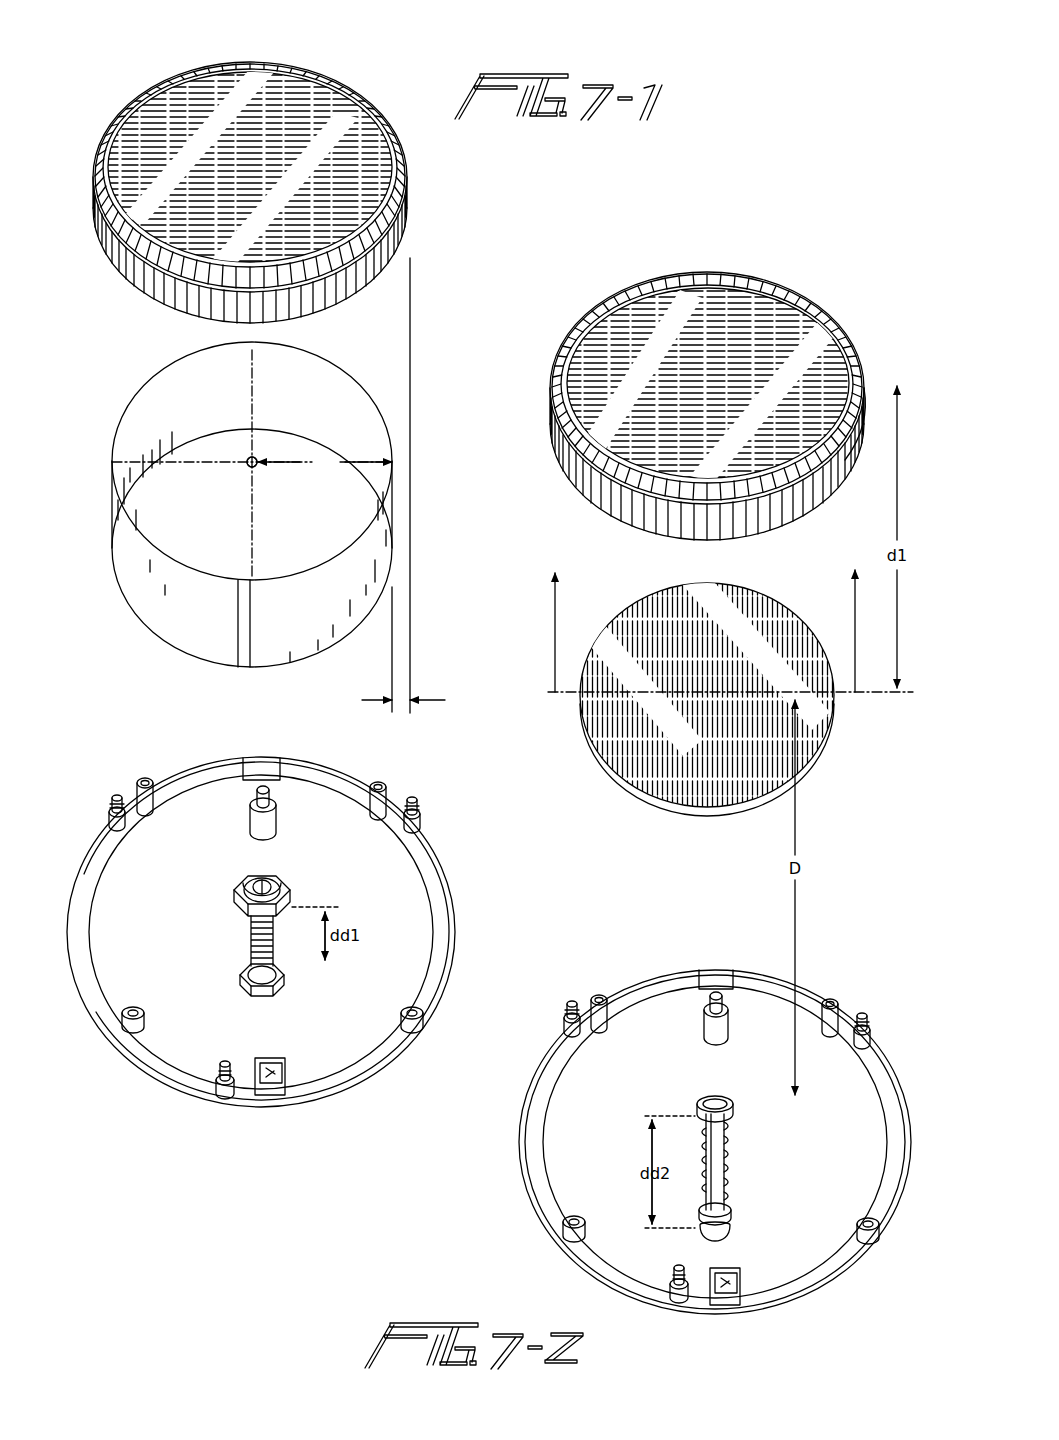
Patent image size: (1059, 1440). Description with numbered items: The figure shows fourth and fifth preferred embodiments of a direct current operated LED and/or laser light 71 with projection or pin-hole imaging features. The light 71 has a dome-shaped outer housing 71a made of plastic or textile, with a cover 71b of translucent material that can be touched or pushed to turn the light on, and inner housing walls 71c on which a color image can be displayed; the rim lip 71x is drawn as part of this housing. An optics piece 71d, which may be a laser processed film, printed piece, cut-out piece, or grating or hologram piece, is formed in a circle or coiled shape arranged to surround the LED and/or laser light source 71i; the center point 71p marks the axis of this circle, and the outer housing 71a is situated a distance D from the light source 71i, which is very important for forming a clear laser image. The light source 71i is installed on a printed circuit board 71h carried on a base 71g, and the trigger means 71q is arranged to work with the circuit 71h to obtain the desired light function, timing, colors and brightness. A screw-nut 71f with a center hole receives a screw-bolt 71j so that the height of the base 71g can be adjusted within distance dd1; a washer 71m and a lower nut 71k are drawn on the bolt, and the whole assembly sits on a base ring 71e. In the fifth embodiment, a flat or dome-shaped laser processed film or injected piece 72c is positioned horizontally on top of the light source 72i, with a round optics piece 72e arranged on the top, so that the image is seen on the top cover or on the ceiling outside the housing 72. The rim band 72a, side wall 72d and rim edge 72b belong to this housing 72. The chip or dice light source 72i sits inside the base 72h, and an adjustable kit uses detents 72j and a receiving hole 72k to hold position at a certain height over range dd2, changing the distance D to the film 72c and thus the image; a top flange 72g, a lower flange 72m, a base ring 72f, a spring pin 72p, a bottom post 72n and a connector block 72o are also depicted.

In FIG. 7-1, the direct current operated LED and/or laser light 71 is at (185, 112).
In FIG. 7-1, the outer housing 71a is at (122, 110).
In FIG. 7-1, the cover 71b is at (305, 110).
In FIG. 7-1, the inner housing walls 71c is at (410, 212).
In FIG. 7-1, the rim lip 71x is at (125, 248).
In FIG. 7-1, the optics piece 71d is at (343, 372).
In FIG. 7-1, the center point 71p is at (247, 462).
In FIG. 7-1, the base ring 71e is at (122, 1030).
In FIG. 7-1, the printed circuit board 71h is at (265, 882).
In FIG. 7-1, the screw-nut 71f is at (243, 876).
In FIG. 7-1, the LED and/or laser light source 71i is at (270, 886).
In FIG. 7-1, the base 71g is at (288, 894).
In FIG. 7-1, the screw-bolt 71j is at (252, 942).
In FIG. 7-1, the washer 71m is at (250, 968).
In FIG. 7-1, the lower hex nut 71k is at (288, 968).
In FIG. 7-1, the trigger means 71q is at (267, 1097).
In FIG. 7-2, the housing 72 is at (730, 303).
In FIG. 7-2, the outer rim band 72a is at (635, 283).
In FIG. 7-2, the laser processed film or injected piece 72c is at (595, 357).
In FIG. 7-2, the side wall 72d is at (558, 463).
In FIG. 7-2, the rim reference edge 72b is at (870, 380).
In FIG. 7-2, the round optics piece 72e is at (815, 750).
In FIG. 7-2, the base ring 72f is at (673, 1014).
In FIG. 7-2, the spring pin 72p is at (860, 1022).
In FIG. 7-2, the bottom post 72n is at (874, 1250).
In FIG. 7-2, the square connector block 72o is at (730, 1298).
In FIG. 7-2, the top flange 72g is at (735, 1106).
In FIG. 7-2, the LED and/or laser light source 72i is at (709, 1099).
In FIG. 7-2, the base 72h is at (699, 1103).
In FIG. 7-2, the detents 72j is at (733, 1123).
In FIG. 7-2, the lower flange 72m is at (730, 1211).
In FIG. 7-2, the receiving hole 72k is at (730, 1230).